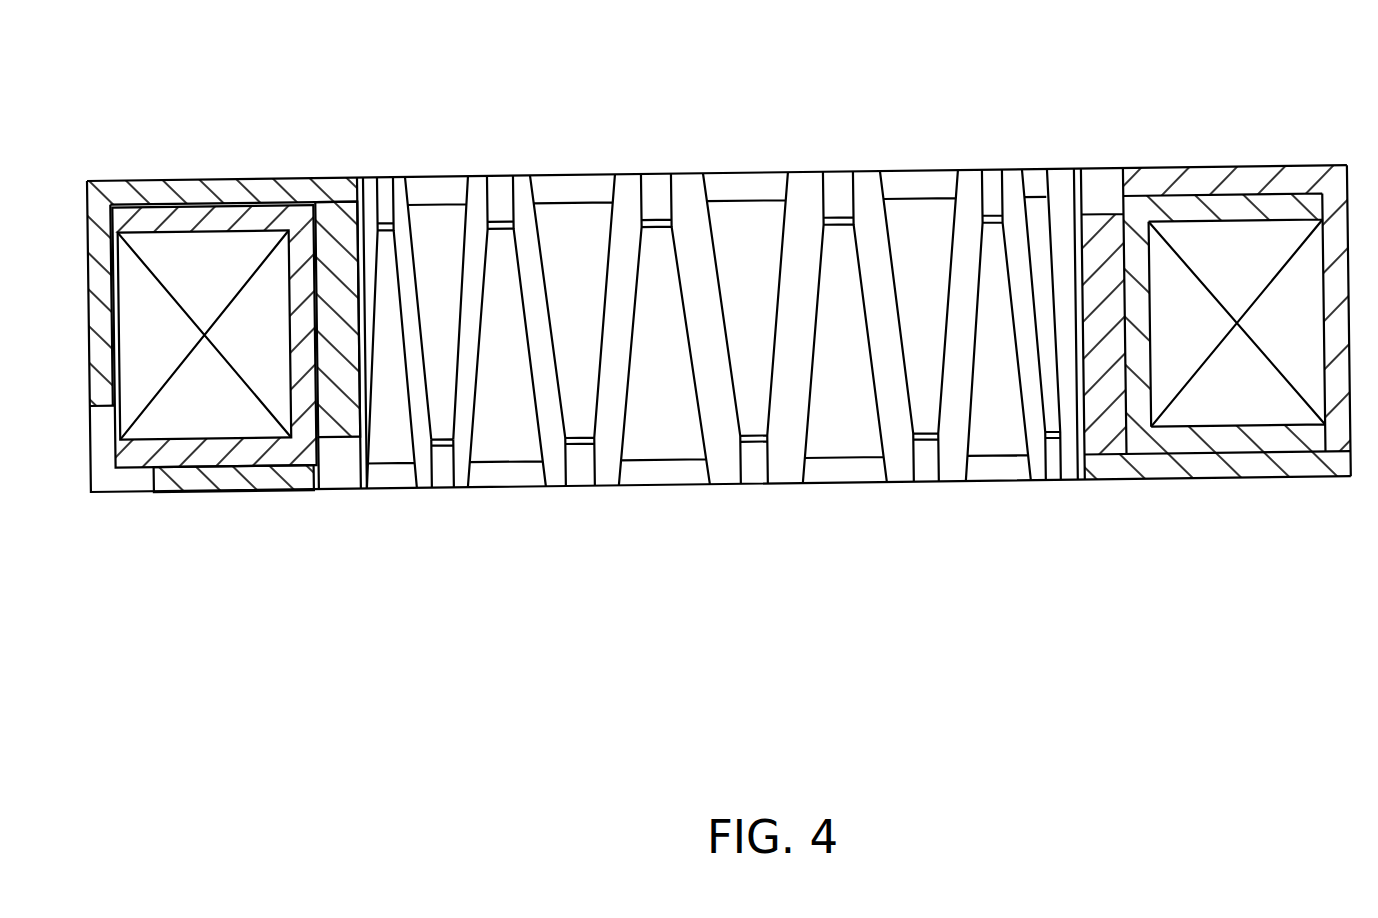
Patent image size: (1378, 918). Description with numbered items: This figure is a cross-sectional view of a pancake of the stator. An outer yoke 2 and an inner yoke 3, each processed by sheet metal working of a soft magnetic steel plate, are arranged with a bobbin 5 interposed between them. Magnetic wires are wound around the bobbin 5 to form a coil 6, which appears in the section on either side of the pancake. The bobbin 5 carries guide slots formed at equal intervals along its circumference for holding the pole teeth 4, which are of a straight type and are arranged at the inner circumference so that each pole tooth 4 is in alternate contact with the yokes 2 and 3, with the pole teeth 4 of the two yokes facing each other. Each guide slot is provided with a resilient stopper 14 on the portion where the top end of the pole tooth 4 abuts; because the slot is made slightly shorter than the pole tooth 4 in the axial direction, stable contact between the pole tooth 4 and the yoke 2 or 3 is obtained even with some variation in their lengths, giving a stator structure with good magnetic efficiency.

The outer yoke 2 is at (1210, 187).
The inner yoke 3 is at (1184, 480).
The pole teeth 4 is at (998, 318).
The bobbin 5 is at (970, 241).
The coil 6 is at (1241, 276).
The stopper 14 is at (443, 449).